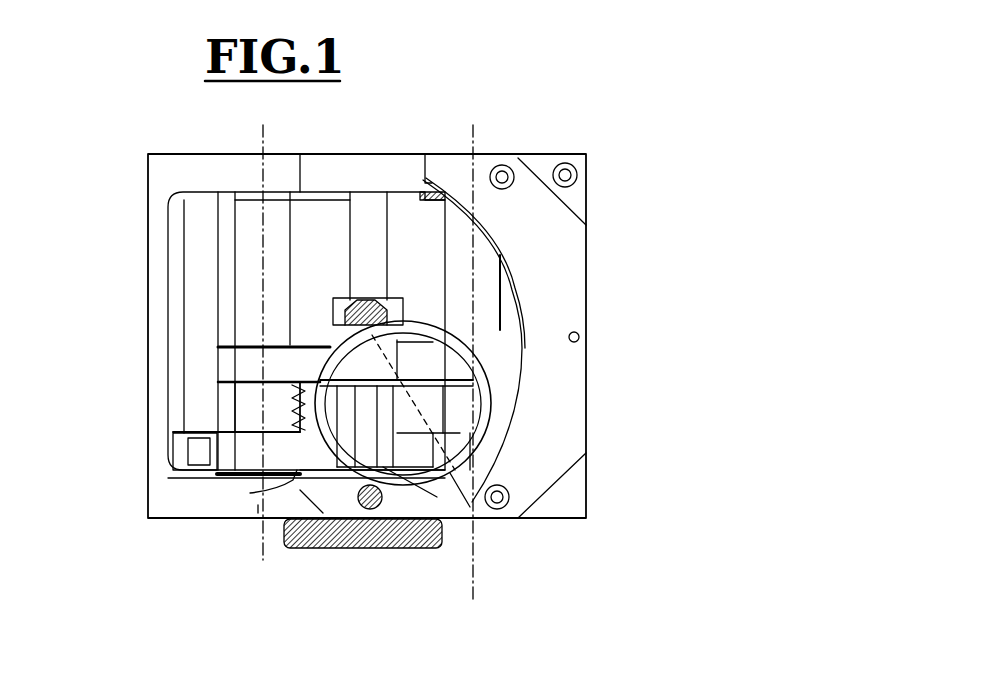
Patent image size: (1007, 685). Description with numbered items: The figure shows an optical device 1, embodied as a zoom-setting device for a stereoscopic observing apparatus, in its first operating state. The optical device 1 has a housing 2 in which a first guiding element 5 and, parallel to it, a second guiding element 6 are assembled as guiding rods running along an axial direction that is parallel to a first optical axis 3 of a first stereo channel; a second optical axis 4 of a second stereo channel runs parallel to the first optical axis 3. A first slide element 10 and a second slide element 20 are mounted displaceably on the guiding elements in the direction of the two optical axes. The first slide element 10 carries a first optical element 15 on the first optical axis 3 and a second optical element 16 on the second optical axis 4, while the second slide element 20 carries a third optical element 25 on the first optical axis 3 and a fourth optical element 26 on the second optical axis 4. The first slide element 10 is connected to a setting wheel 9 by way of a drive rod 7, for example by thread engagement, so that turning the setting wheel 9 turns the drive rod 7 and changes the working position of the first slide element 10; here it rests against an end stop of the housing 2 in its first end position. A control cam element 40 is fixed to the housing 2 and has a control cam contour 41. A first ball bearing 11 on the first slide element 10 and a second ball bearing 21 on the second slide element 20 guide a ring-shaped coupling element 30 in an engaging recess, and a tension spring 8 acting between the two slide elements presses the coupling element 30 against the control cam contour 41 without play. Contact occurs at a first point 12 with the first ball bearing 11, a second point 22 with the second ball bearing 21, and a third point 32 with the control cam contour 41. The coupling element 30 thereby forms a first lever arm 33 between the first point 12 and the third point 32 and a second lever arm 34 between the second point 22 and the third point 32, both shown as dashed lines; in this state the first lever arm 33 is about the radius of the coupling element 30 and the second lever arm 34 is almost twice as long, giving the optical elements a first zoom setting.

The optical device 1 is at (160, 125).
The housing 2 is at (150, 178).
The first optical axis 3 is at (265, 497).
The second optical axis 4 is at (560, 455).
The first guiding element 5 is at (183, 235).
The second guiding element 6 is at (390, 234).
The drive rod 7 is at (258, 513).
The tension spring 8 is at (248, 412).
The setting wheel 9 is at (403, 550).
The first slide element 10 is at (178, 468).
The first ball bearing 11 is at (333, 500).
The first point 12 is at (375, 547).
The first optical element 15 is at (192, 424).
The second optical element 16 is at (520, 440).
The second slide element 20 is at (235, 348).
The second ball bearing 21 is at (340, 302).
The second point 22 is at (425, 322).
The third optical element 25 is at (205, 397).
The fourth optical element 26 is at (500, 405).
The coupling element 30 is at (580, 341).
The third point 32 is at (470, 520).
The first lever arm 33 is at (441, 530).
The second lever arm 34 is at (505, 372).
The control cam element 40 is at (553, 213).
The control cam contour 41 is at (510, 275).